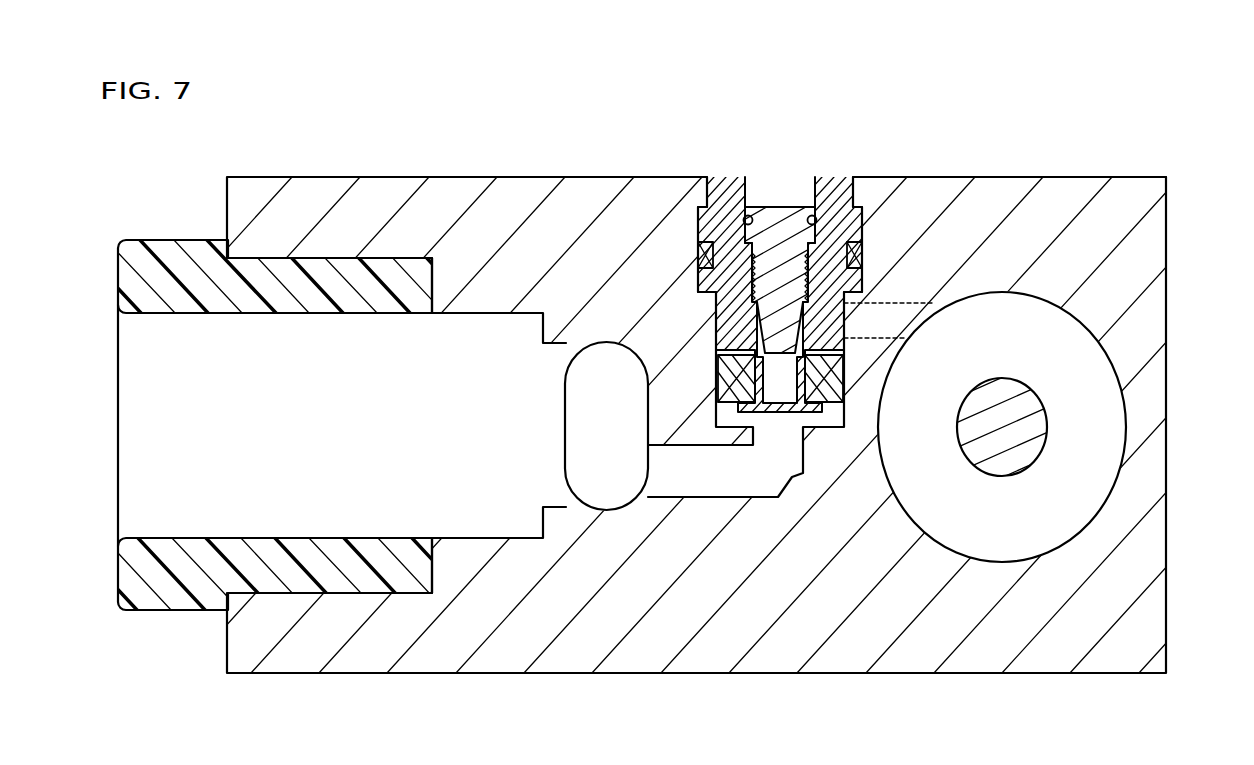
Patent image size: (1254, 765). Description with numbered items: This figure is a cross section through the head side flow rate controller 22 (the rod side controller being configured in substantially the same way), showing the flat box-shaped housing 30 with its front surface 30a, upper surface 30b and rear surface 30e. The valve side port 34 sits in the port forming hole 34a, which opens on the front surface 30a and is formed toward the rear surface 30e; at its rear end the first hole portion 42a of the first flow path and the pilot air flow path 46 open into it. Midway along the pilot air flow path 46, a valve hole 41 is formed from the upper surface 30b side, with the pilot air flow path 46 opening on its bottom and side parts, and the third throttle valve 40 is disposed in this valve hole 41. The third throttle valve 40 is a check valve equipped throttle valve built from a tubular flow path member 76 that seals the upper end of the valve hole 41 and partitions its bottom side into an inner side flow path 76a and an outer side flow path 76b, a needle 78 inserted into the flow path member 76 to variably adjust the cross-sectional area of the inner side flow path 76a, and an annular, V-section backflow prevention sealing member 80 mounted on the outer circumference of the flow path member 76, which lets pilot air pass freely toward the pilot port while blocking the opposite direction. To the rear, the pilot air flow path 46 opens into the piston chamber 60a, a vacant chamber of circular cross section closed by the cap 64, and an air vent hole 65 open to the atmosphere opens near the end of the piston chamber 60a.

The head side flow rate controller 22 is at (1118, 152).
The housing 30 is at (1060, 195).
The front surface 30a is at (228, 195).
The upper surface 30b is at (958, 177).
The rear surface 30e is at (1166, 240).
The valve side port 34 is at (233, 427).
The port forming hole 34a is at (473, 538).
The first hole portion 42a is at (589, 427).
The pilot air flow path 46 is at (680, 479).
The third throttle valve 40 is at (822, 166).
The valve hole 41 is at (720, 317).
The flow path member 76 is at (721, 196).
The inner side flow path 76a is at (780, 392).
The outer side flow path 76b is at (726, 412).
The needle 78 is at (775, 215).
The backflow prevention sealing member 80 is at (832, 377).
The piston chamber 60a is at (1102, 502).
The cap 64 is at (1000, 395).
The air vent hole 65 is at (1126, 415).